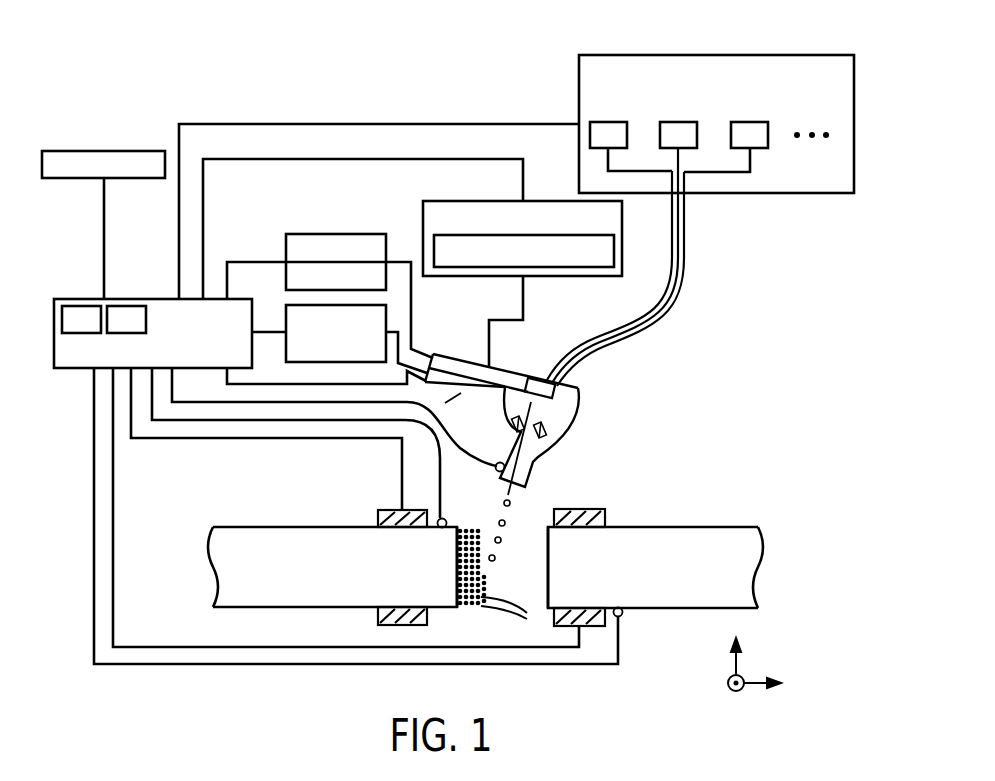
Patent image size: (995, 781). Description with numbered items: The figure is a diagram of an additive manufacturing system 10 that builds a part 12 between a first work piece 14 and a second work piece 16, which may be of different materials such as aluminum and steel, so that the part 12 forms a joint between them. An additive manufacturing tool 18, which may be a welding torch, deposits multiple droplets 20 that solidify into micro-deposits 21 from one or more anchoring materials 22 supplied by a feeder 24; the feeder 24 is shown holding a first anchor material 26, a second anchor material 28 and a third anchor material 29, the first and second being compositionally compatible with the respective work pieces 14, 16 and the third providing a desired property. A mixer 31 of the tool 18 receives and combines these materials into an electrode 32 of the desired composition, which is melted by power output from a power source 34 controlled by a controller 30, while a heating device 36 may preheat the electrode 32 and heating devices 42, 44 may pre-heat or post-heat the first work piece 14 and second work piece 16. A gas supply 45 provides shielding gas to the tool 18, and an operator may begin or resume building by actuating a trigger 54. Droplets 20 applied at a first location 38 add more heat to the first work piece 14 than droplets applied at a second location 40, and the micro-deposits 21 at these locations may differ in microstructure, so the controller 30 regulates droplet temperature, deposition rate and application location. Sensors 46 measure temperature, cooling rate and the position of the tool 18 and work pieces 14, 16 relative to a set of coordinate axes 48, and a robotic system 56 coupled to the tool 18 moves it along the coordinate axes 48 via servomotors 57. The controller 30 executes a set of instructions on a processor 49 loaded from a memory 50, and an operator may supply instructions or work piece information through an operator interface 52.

The additive manufacturing system 10 is at (308, 114).
The part 12 is at (488, 628).
The first work piece 14 is at (332, 567).
The second work piece 16 is at (655, 567).
The additive manufacturing tool 18 is at (592, 378).
The droplets 20 is at (510, 504).
The micro-deposits 21 is at (512, 621).
The anchoring materials 22 is at (782, 105).
The feeder 24 is at (716, 55).
The first anchor material 26 is at (606, 122).
The second anchor material 28 is at (678, 122).
The third anchor material 29 is at (748, 122).
The controller 30 is at (82, 369).
The mixer 31 is at (528, 380).
The electrode 32 is at (552, 412).
The power source 34 is at (286, 318).
The heating device 36 is at (548, 436).
The first location 38 is at (460, 618).
The second location 40 is at (500, 588).
The heating device 42 is at (378, 513).
The heating device 44 is at (598, 510).
The gas supply 45 is at (334, 234).
The sensors 46 is at (494, 469).
The coordinate axes 48 is at (762, 702).
The processor 49 is at (80, 306).
The memory 50 is at (127, 306).
The operator interface 52 is at (101, 151).
The trigger 54 is at (455, 397).
The robotic system 56 is at (545, 201).
The servomotors 57 is at (614, 251).